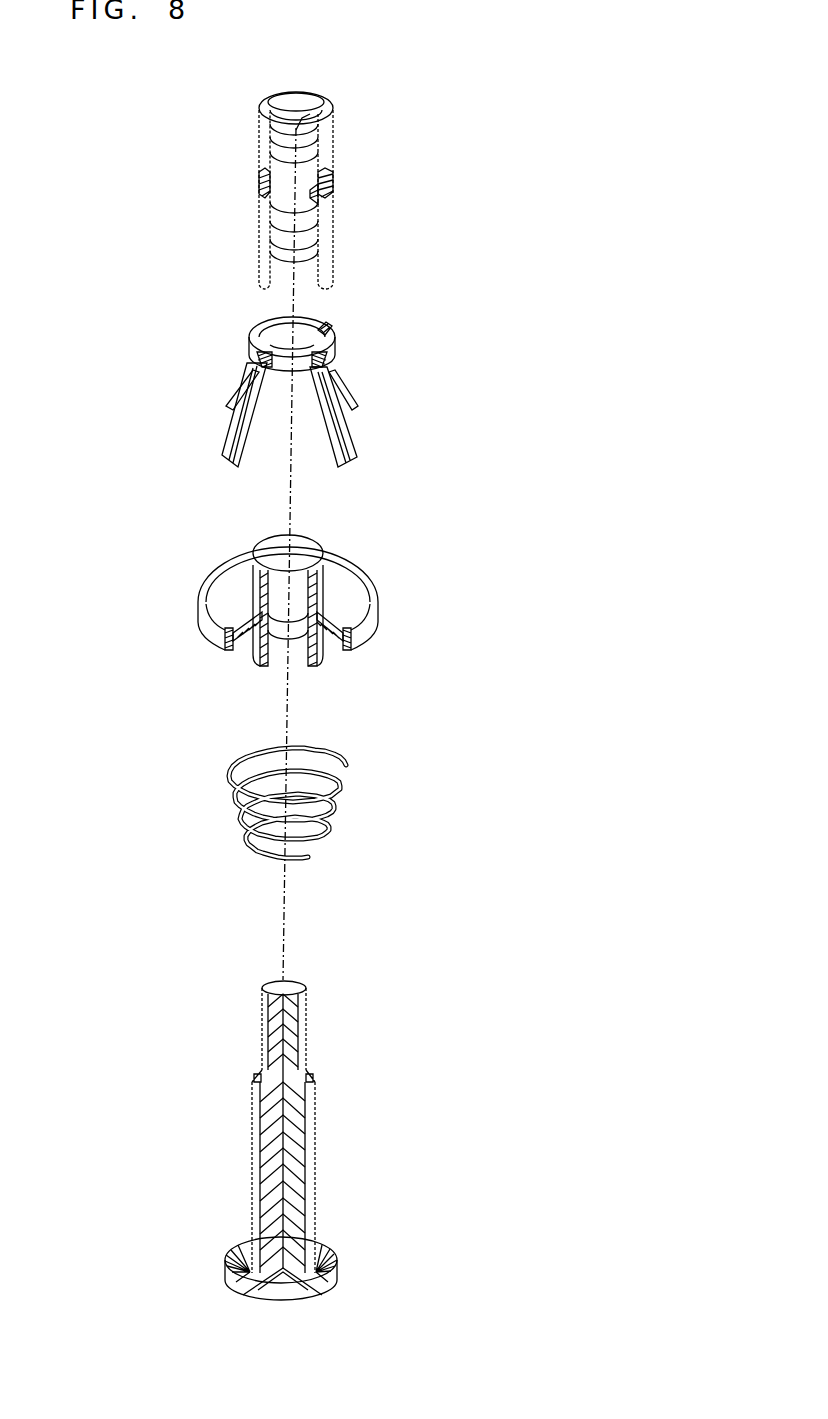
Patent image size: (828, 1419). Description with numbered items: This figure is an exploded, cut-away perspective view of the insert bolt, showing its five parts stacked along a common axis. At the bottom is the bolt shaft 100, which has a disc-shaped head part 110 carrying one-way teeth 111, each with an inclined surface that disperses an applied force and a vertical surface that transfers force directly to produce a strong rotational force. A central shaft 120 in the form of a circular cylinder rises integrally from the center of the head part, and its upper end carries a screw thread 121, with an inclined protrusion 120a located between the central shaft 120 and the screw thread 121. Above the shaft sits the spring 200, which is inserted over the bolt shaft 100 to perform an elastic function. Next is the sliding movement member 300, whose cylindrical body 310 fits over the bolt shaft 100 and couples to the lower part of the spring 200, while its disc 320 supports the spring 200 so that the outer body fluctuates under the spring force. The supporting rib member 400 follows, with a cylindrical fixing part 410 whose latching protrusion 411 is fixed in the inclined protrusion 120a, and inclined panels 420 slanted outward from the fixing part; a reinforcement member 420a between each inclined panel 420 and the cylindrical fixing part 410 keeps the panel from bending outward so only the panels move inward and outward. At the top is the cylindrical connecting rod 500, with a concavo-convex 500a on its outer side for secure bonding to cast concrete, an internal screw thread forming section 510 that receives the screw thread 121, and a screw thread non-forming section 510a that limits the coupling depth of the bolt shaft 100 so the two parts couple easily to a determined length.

The bolt shaft 100 is at (316, 1140).
The disc-shaped head part 110 is at (333, 1270).
The one-way teeth 111 is at (330, 1257).
The central shaft 120 is at (253, 1165).
The inclined protrusion 120a is at (313, 1072).
The screw thread 121 is at (306, 1015).
The spring 200 is at (347, 767).
The sliding movement member 300 is at (298, 581).
The cylindrical body 310 is at (258, 582).
The disc 320 is at (378, 604).
The supporting rib member 400 is at (290, 376).
The cylindrical fixing part 410 is at (337, 357).
The latching protrusion 411 is at (323, 333).
The inclined panel 420 is at (350, 443).
The reinforcement member 420a is at (237, 413).
The connecting rod 500 is at (333, 167).
The concavo-convex 500a is at (259, 180).
The screw thread forming section 510 is at (335, 125).
The screw thread non-forming section 510a is at (333, 203).